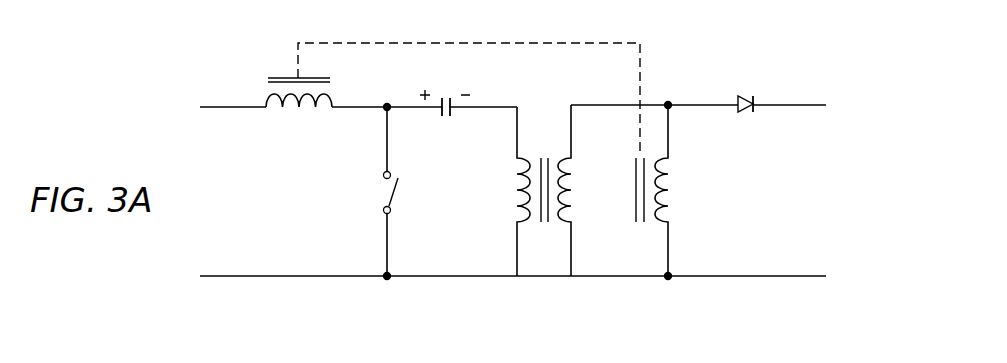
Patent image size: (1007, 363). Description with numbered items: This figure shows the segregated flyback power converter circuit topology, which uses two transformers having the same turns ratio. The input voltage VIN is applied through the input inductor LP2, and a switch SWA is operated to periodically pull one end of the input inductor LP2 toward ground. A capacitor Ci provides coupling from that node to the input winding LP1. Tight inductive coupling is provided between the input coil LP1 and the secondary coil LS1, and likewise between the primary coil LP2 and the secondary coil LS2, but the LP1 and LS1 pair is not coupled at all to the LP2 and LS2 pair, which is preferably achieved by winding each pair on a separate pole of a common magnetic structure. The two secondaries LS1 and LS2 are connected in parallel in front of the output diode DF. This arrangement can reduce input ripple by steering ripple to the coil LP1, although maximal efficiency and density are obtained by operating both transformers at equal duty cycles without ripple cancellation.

The input voltage VIN is at (212, 110).
The primary coil LP2 is at (299, 111).
The capacitor Ci is at (468, 120).
The switch SWA is at (410, 191).
The input coil LP1 is at (518, 191).
The secondary coil LS1 is at (648, 190).
The secondary coil LS2 is at (664, 190).
The output diode DF is at (781, 92).